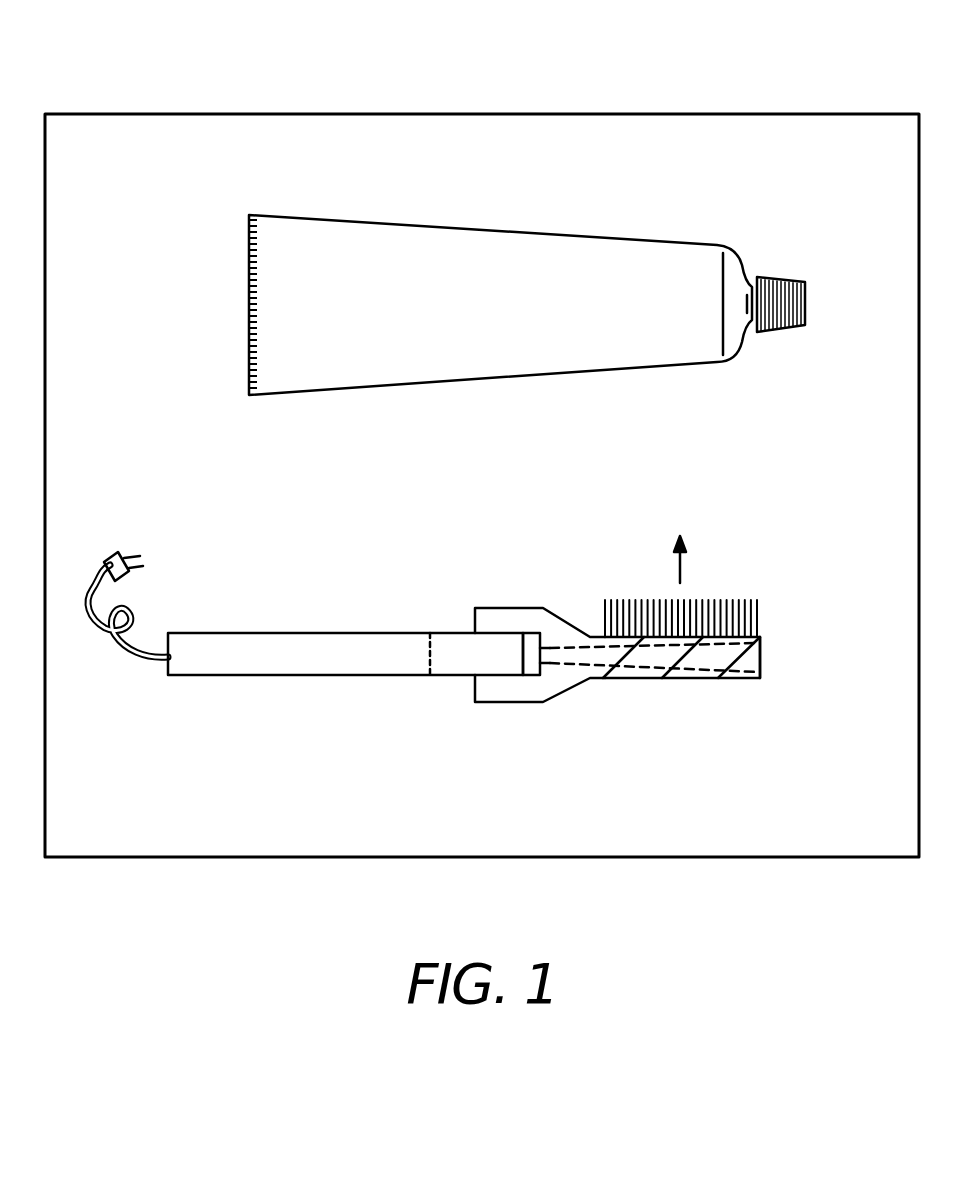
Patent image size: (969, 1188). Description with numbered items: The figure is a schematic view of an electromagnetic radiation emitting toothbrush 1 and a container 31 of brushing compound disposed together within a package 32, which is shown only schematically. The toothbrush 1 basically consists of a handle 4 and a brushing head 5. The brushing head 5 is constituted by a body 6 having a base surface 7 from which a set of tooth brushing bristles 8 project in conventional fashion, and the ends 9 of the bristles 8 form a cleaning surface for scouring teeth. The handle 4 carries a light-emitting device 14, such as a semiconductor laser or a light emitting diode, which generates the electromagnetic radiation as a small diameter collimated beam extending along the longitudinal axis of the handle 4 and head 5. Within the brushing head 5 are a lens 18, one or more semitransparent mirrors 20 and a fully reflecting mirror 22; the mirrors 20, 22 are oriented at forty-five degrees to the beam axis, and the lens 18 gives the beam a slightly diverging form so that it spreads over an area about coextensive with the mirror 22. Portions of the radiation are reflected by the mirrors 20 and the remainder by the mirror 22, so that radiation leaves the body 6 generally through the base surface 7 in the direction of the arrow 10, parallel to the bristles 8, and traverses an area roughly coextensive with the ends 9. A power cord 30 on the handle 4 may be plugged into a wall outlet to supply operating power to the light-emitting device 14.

The electromagnetic radiation emitting toothbrush 1 is at (483, 626).
The handle 4 is at (283, 663).
The brushing head 5 is at (766, 633).
The body 6 is at (553, 690).
The base surface 7 is at (598, 632).
The tooth brushing bristles 8 is at (758, 600).
The ends of the bristles 9 is at (630, 603).
The arrow 10 is at (683, 571).
The light-emitting device 14 is at (458, 652).
The lens 18 is at (533, 638).
The semitransparent mirrors 20 is at (682, 652).
The fully reflecting mirror 22 is at (760, 678).
The power cord 30 is at (108, 650).
The container 31 is at (527, 233).
The package 32 is at (505, 114).